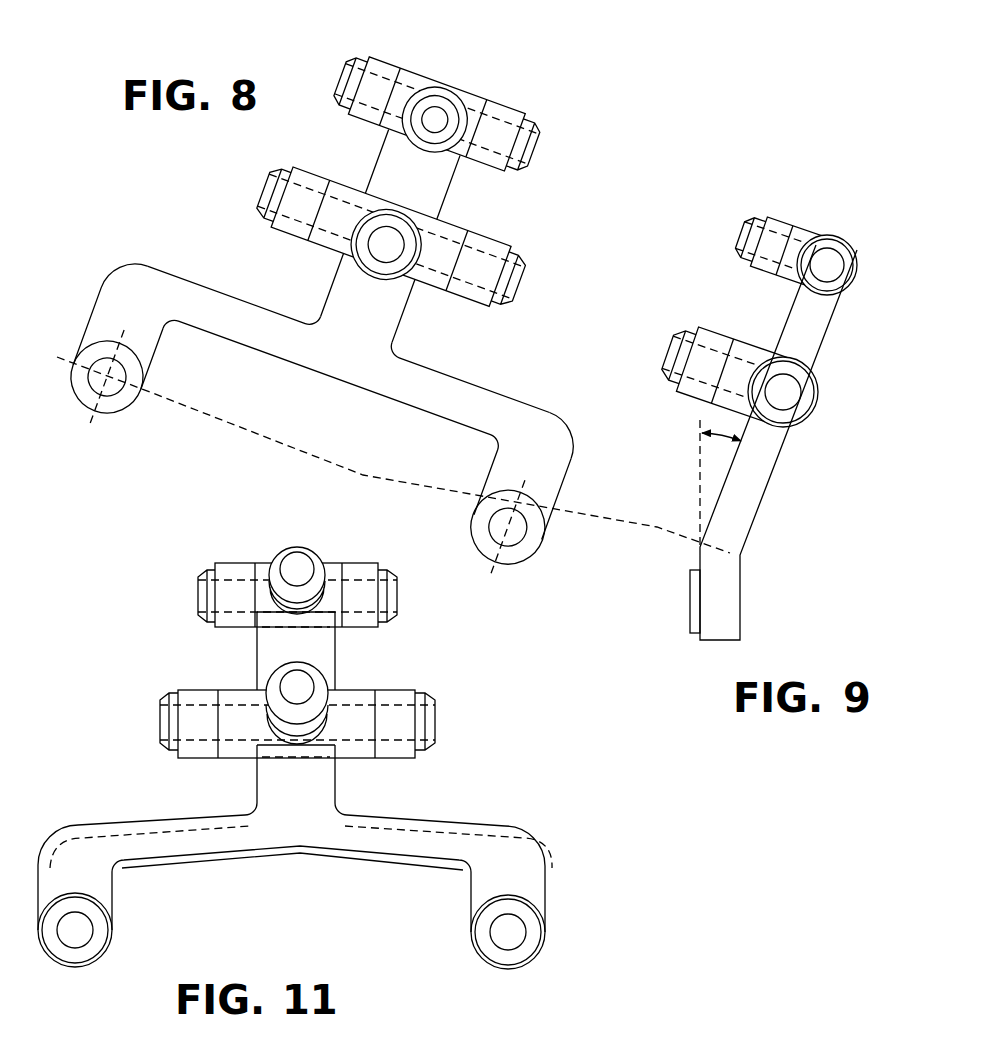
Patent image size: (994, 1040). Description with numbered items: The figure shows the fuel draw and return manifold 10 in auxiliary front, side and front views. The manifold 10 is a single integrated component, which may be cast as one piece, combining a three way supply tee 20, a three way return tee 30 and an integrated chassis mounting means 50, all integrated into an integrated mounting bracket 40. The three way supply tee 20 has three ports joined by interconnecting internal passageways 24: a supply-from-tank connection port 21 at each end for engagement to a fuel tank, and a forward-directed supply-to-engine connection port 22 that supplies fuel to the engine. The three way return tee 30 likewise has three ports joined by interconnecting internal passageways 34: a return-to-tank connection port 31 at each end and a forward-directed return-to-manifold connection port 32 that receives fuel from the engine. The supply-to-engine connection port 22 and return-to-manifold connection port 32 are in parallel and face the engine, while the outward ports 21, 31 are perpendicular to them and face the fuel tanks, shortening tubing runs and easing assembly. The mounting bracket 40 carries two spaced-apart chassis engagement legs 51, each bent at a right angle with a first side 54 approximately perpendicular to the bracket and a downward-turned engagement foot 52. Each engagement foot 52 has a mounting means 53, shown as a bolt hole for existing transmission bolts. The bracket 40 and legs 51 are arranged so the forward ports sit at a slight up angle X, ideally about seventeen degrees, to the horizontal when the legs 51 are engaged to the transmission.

In FIG. 8, the manifold 10 is at (392, 297).
In FIG. 9, the manifold 10 is at (769, 407).
In FIG. 11, the manifold 10 is at (295, 729).
In FIG. 8, the three way supply tee 20 is at (446, 222).
In FIG. 9, the three way supply tee 20 is at (748, 340).
In FIG. 11, the three way supply tee 20 is at (350, 690).
In FIG. 8, the supply-from-tank connection port 21 is at (514, 250).
In FIG. 11, the supply-from-tank connection port 21 is at (196, 690).
In FIG. 9, the supply-to-engine connection port 22 is at (712, 332).
In FIG. 11, the supply-to-engine connection port 22 is at (321, 740).
In FIG. 8, the interconnecting internal passageways 24 is at (382, 251).
In FIG. 8, the three way return tee 30 is at (484, 96).
In FIG. 9, the three way return tee 30 is at (821, 235).
In FIG. 11, the three way return tee 30 is at (254, 562).
In FIG. 8, the return-to-tank connection port 31 is at (382, 62).
In FIG. 11, the return-to-tank connection port 31 is at (361, 563).
In FIG. 8, the return-to-manifold connection port 32 is at (447, 89).
In FIG. 9, the return-to-manifold connection port 32 is at (778, 224).
In FIG. 11, the return-to-manifold connection port 32 is at (290, 547).
In FIG. 8, the interconnecting internal passageways 34 is at (440, 118).
In FIG. 8, the integrated mounting bracket 40 is at (375, 157).
In FIG. 9, the integrated mounting bracket 40 is at (829, 334).
In FIG. 11, the integrated mounting bracket 40 is at (255, 660).
In FIG. 8, the integrated chassis mounting means 50 is at (236, 343).
In FIG. 11, the integrated chassis mounting means 50 is at (352, 866).
In FIG. 8, the chassis engagement legs 51 is at (150, 271).
In FIG. 11, the chassis engagement legs 51 is at (79, 826).
In FIG. 8, the engagement feet 52 is at (558, 516).
In FIG. 8, the mounting means 53 is at (112, 389).
In FIG. 11, the mounting means 53 is at (80, 930).
In FIG. 8, the first side 54 is at (446, 382).